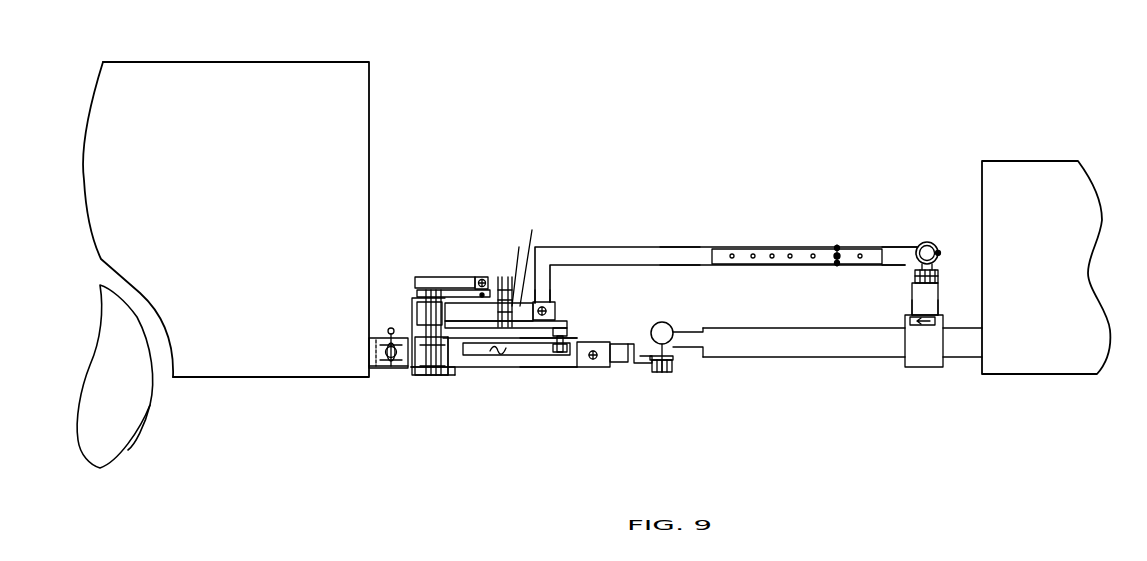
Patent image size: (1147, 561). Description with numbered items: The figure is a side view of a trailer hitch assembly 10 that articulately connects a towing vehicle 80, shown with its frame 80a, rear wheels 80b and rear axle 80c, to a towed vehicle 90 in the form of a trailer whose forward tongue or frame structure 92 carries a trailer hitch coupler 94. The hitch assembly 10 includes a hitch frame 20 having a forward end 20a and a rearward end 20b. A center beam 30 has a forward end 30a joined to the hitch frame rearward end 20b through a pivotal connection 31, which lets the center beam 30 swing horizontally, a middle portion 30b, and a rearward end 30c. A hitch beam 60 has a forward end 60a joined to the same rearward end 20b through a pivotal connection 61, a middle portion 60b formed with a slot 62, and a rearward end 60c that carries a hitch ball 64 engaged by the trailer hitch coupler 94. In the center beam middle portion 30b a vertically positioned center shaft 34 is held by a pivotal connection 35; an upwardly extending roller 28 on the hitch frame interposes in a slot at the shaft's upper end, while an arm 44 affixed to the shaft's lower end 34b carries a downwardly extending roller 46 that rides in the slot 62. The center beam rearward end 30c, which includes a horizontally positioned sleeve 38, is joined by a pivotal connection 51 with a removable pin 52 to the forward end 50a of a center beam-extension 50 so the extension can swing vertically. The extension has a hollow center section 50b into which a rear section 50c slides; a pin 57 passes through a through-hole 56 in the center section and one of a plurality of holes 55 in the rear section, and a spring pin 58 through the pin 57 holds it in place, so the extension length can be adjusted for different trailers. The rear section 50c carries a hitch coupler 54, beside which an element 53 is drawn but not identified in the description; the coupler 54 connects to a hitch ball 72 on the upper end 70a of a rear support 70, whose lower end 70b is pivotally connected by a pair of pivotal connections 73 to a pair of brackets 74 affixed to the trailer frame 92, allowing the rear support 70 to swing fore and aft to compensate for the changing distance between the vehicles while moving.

The hitch assembly 10 is at (546, 188).
The hitch frame 20 is at (410, 378).
The forward end of hitch frame 20a is at (378, 372).
The rearward end of hitch frame 20b is at (415, 378).
The roller 28 is at (476, 278).
The center beam 30 is at (532, 228).
The forward end of center beam 30a is at (412, 298).
The middle portion of center beam 30b is at (519, 247).
The rearward end of center beam 30c is at (563, 322).
The pivotal connection 31 is at (415, 295).
The center shaft 34 is at (446, 275).
The lower end of center shaft 34b is at (446, 275).
The pivotal connection 35 is at (493, 275).
The sleeve 38 is at (423, 277).
The arm 44 is at (493, 327).
The roller 46 is at (566, 346).
The center beam-extension 50 is at (608, 246).
The forward end of center beam-extension 50a is at (552, 291).
The center section of center beam-extension 50b is at (680, 246).
The rear section of center beam-extension 50c is at (890, 247).
The pivotal connection 51 is at (577, 305).
The removable pin 52 is at (555, 308).
The ring 53 is at (927, 242).
The hitch coupler 54 is at (920, 243).
The holes 55 is at (733, 253).
The through-hole 56 is at (835, 256).
The pin 57 is at (837, 247).
The spring pin 58 is at (837, 264).
The hitch beam 60 is at (527, 370).
The forward end of hitch beam 60a is at (422, 380).
The middle portion of hitch beam 60b is at (546, 368).
The rearward end of hitch beam 60c is at (603, 368).
The pivotal connection 61 is at (442, 378).
The slot 62 is at (492, 356).
The hitch ball 64 is at (652, 347).
The rear support 70 is at (910, 298).
The upper end of rear support 70a is at (938, 273).
The lower end of rear support 70b is at (910, 318).
The hitch ball 72 is at (940, 252).
The pivotal connection 73 is at (925, 317).
The brackets 74 is at (910, 367).
The towing vehicle 80 is at (293, 266).
The frame 80a is at (255, 377).
The rear wheels 80b is at (128, 450).
The rear axle 80c is at (98, 424).
The towed vehicle 90 is at (1035, 341).
The tongue or frame structure 92 is at (803, 358).
The trailer hitch coupler 94 is at (680, 347).